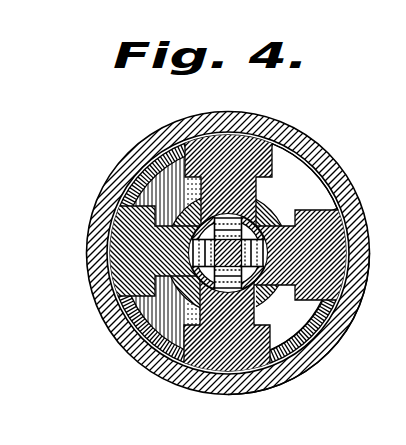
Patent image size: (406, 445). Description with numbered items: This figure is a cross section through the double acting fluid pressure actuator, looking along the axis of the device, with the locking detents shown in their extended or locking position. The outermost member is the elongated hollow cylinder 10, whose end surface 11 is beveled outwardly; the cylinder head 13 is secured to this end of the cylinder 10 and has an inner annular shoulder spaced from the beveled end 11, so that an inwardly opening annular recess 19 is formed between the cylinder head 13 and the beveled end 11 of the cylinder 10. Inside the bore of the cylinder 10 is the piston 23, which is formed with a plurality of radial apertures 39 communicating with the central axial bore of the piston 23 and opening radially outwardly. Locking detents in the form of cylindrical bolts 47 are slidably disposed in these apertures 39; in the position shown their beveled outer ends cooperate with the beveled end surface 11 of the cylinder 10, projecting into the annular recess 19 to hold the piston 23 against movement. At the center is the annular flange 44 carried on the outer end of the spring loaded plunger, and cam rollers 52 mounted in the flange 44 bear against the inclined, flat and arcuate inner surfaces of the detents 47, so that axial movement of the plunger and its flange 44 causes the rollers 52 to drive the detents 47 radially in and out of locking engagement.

The elongated hollow cylinder 10 is at (330, 183).
The beveled end surface 11 is at (322, 162).
The cylinder head 13 is at (335, 329).
The annular recess 19 is at (327, 306).
The piston 23 is at (287, 315).
The radial apertures 39 is at (258, 166).
The annular flange 44 is at (226, 256).
The locking detents 47 is at (325, 221).
The cam rollers 52 is at (215, 212).